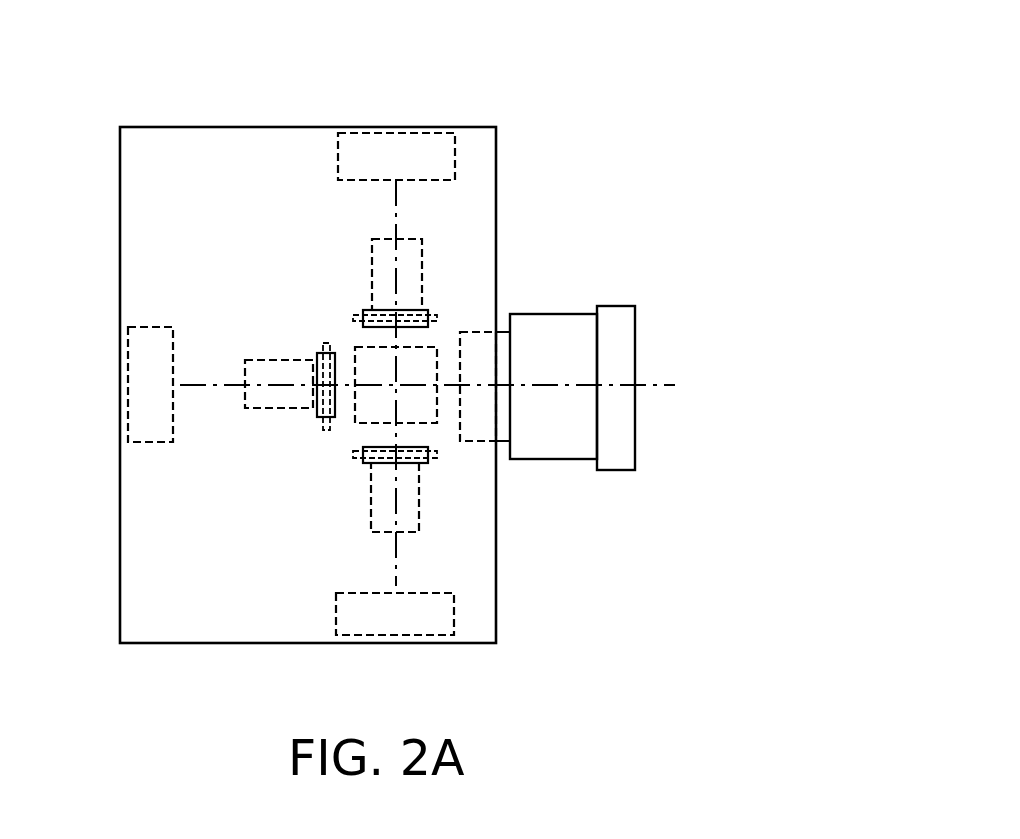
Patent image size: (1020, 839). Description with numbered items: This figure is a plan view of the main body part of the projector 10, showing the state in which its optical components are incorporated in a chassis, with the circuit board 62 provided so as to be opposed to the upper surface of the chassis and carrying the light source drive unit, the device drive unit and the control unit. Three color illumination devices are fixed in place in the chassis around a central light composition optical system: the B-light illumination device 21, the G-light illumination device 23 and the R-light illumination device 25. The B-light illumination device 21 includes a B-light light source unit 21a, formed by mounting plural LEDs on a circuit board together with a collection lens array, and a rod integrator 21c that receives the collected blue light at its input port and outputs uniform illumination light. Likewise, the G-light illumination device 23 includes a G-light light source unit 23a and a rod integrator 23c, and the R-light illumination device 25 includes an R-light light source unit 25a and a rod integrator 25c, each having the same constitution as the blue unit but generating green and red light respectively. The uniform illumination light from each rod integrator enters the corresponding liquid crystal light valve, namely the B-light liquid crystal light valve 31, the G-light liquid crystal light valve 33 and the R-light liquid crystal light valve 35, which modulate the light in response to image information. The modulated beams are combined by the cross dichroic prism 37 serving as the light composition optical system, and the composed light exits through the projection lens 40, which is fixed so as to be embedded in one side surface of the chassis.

The projector 10 is at (656, 151).
The circuit board 62 is at (234, 127).
The B-light illumination device 21 is at (468, 197).
The B-light light source unit 21a is at (405, 133).
The rod integrator 21c is at (370, 273).
The G-light illumination device 23 is at (181, 467).
The G-light light source unit 23a is at (148, 327).
The rod integrator 23c is at (265, 408).
The R-light illumination device 25 is at (349, 546).
The R-light light source unit 25a is at (454, 612).
The rod integrator 25c is at (422, 485).
The B-light liquid crystal light valve 31 is at (437, 315).
The G-light liquid crystal light valve 33 is at (327, 428).
The R-light liquid crystal light valve 35 is at (437, 453).
The cross dichroic prism 37 is at (434, 347).
The projection lens 40 is at (571, 327).